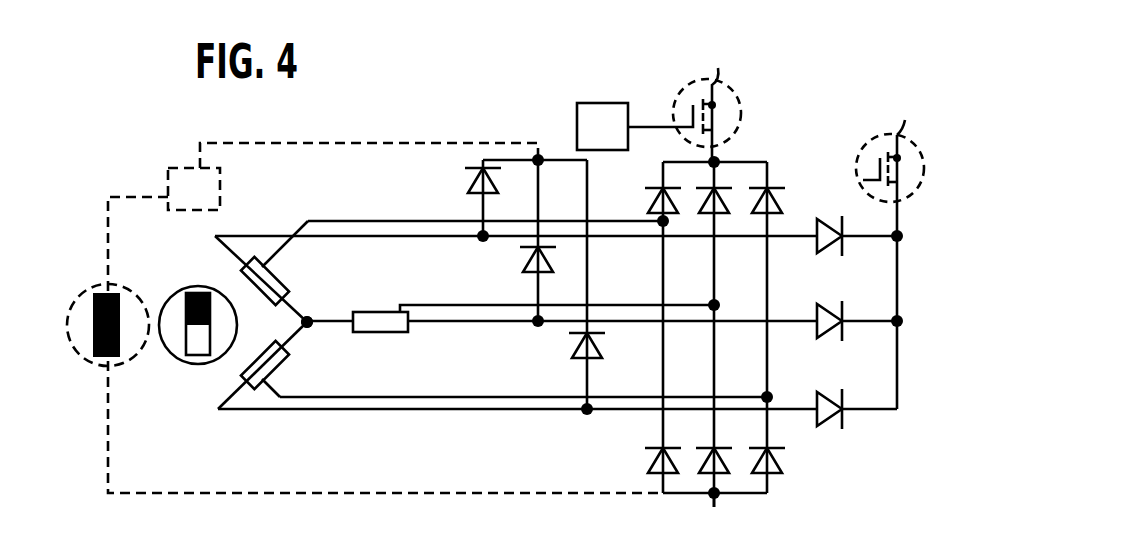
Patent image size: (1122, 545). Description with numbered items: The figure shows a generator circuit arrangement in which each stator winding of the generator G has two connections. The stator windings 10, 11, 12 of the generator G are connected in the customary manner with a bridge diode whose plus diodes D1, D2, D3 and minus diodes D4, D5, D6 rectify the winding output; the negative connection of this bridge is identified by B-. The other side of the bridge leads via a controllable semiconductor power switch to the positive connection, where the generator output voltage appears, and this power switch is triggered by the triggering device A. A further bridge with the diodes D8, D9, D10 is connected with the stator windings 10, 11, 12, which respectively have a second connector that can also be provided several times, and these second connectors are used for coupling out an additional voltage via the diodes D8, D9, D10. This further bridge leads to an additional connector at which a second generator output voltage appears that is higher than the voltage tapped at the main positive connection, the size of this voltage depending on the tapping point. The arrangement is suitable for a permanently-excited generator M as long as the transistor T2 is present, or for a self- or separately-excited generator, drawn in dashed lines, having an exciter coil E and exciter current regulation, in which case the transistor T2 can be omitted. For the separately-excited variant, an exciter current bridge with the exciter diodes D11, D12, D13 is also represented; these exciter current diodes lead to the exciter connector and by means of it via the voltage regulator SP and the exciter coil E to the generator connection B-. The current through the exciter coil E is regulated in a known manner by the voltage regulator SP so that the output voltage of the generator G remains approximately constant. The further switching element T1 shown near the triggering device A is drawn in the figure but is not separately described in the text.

The generator G is at (285, 318).
The stator winding 10 is at (391, 333).
The stator winding 11 is at (272, 276).
The stator winding 12 is at (273, 378).
The exciter coil E is at (126, 294).
The permanently-excited generator M is at (211, 300).
The voltage regulator SP is at (220, 192).
The triggering device A is at (602, 126).
The transistor switch T1 is at (676, 110).
The transistor T2 is at (872, 161).
The plus diode D1 is at (652, 200).
The plus diode D2 is at (709, 205).
The plus diode D3 is at (778, 205).
The minus diode D4 is at (654, 474).
The minus diode D5 is at (724, 470).
The minus diode D6 is at (780, 470).
The diode of further bridge D8 is at (818, 250).
The diode of further bridge D9 is at (830, 306).
The diode of further bridge D10 is at (830, 395).
The exciter diode D11 is at (468, 185).
The exciter diode D12 is at (524, 269).
The exciter diode D13 is at (578, 360).
The negative connection B- is at (707, 519).